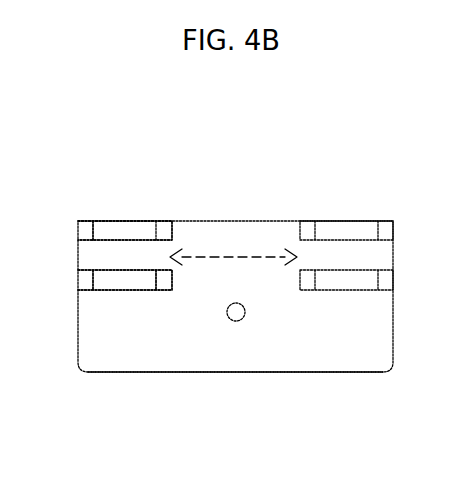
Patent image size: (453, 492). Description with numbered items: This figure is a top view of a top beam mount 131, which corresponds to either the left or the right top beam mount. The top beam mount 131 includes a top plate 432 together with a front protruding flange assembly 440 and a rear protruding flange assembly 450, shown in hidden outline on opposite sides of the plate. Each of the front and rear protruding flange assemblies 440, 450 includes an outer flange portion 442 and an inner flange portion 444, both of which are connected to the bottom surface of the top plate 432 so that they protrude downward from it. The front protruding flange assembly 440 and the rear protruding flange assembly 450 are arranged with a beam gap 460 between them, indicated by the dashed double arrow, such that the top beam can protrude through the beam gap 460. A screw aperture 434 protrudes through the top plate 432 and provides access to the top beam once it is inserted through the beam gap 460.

The top beam mount 131 is at (84, 382).
The top plate 432 is at (243, 373).
The screw aperture 434 is at (250, 310).
The front protruding flange assembly 440 is at (133, 216).
The outer flange portion 442 is at (90, 219).
The inner flange portion 444 is at (136, 290).
The rear protruding flange assembly 450 is at (313, 214).
The beam gap 460 is at (233, 255).